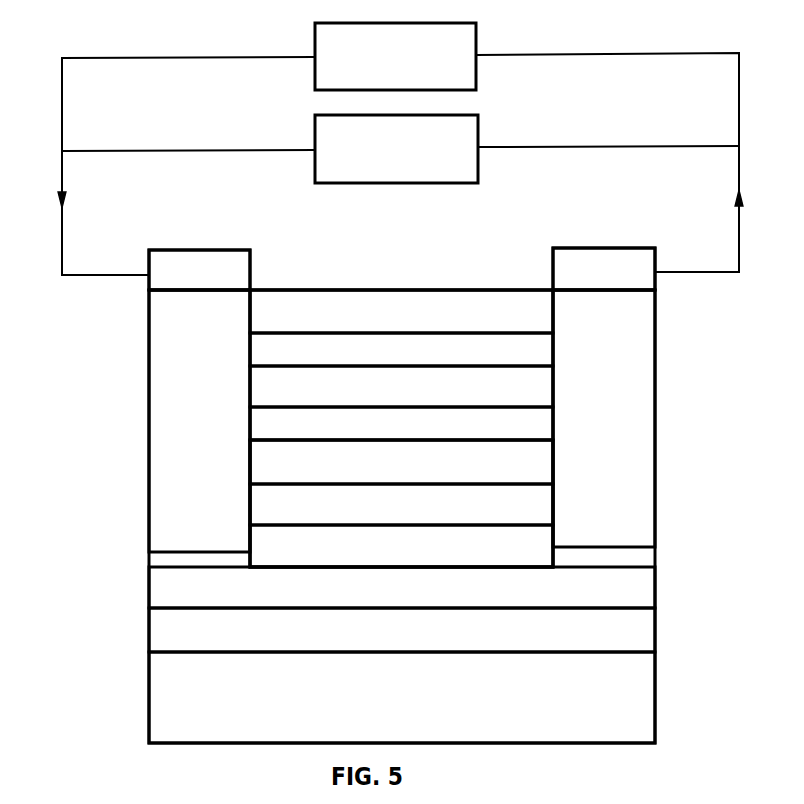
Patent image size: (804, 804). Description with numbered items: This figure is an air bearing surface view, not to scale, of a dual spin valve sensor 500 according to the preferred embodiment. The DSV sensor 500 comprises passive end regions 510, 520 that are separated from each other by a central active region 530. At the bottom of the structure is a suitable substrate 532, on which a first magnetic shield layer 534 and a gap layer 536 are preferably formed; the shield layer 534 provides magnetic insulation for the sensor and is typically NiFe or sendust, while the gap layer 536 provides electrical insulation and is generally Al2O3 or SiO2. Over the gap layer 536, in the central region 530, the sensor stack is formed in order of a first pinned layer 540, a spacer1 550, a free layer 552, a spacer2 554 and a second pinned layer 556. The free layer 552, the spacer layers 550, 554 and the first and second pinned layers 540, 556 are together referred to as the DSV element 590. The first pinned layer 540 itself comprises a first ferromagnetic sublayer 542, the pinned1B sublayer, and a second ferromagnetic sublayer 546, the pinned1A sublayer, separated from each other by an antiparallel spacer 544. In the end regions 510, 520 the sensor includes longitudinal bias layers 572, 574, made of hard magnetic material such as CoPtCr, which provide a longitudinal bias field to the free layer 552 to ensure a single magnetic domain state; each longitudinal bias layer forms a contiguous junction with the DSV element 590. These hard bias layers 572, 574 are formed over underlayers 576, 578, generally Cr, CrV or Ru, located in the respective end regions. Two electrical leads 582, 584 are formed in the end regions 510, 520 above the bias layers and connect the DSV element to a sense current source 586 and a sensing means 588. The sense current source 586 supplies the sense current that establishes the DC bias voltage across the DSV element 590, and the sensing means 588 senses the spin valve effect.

The dual spin valve (DSV) sensor 500 is at (103, 757).
The passive end region 510 is at (248, 240).
The passive end region 520 is at (654, 240).
The central active region 530 is at (545, 240).
The substrate 532 is at (185, 703).
The first magnetic shield layer 534 is at (180, 638).
The gap layer 536 is at (175, 595).
The first pinned layer 540 is at (230, 562).
The first ferromagnetic sublayer (pinned1B sublayer) 542 is at (536, 541).
The antiparallel spacer 544 is at (533, 503).
The second ferromagnetic sublayer (pinned1A sublayer) 546 is at (518, 460).
The spacer1 550 is at (275, 422).
The free layer 552 is at (280, 388).
The spacer2 554 is at (287, 347).
The second pinned layer 556 is at (292, 310).
The longitudinal bias layer 572 is at (177, 325).
The longitudinal bias layer 574 is at (632, 320).
The underlayer 576 is at (160, 562).
The underlayer 578 is at (636, 553).
The electrical lead (first SV lead) 582 is at (237, 272).
The electrical lead (second SV lead) 584 is at (565, 272).
The sense current source 586 is at (476, 80).
The sensing means 588 is at (315, 127).
The DSV element 590 is at (568, 292).